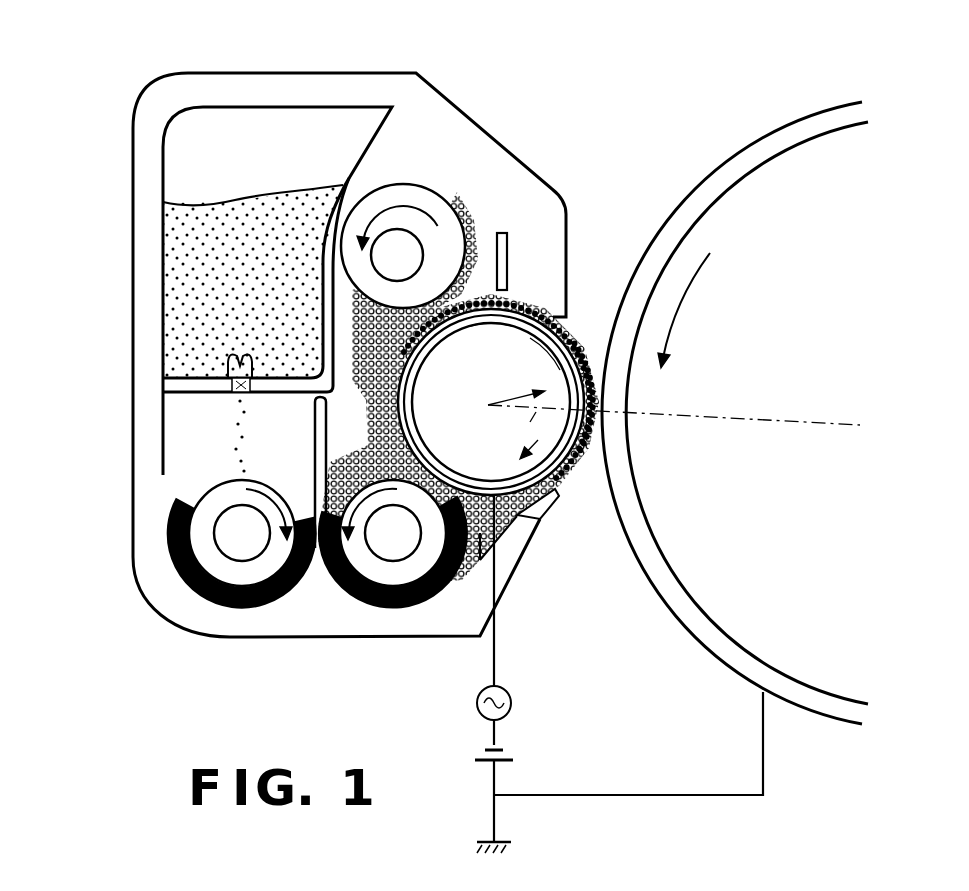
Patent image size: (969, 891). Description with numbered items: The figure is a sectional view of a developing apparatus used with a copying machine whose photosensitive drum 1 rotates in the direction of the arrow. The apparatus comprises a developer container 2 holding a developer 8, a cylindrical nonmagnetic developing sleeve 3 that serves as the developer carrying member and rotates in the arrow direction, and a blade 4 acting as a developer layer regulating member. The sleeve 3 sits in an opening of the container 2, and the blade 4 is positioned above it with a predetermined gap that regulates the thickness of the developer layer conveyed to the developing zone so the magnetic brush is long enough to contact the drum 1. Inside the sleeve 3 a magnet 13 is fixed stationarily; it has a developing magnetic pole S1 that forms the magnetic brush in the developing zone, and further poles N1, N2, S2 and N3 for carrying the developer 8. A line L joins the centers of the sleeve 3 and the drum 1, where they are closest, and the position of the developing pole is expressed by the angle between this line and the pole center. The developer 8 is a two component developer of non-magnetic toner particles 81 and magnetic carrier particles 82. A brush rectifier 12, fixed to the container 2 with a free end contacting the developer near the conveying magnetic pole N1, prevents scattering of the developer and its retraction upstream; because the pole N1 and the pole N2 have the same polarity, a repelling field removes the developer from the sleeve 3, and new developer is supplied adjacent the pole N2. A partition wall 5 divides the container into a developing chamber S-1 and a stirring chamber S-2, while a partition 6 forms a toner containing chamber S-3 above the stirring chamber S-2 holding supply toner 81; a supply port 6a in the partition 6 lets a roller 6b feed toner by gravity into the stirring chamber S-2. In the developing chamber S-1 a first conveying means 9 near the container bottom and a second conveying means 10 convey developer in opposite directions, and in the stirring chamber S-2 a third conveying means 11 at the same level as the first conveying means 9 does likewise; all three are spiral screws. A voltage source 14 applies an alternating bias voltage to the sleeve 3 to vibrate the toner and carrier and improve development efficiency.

The photosensitive drum 1 is at (777, 140).
The developer container 2 is at (132, 318).
The developing sleeve 3 is at (497, 419).
The blade 4 is at (507, 235).
The partition wall 5 is at (300, 433).
The partition 6 is at (200, 380).
The supply port 6a is at (240, 393).
The roller 6b is at (228, 386).
The developer 8 is at (473, 265).
The first conveying means 9 is at (390, 580).
The second conveying means 10 is at (443, 205).
The third conveying means 11 is at (197, 538).
The brush rectifier 12 is at (543, 500).
The magnet 13 is at (565, 335).
The voltage source 14 is at (512, 735).
The non-magnetic toner particles 81 is at (163, 270).
The magnetic carrier particles 82 is at (584, 345).
The developing chamber S-1 is at (343, 290).
The stirring chamber S-2 is at (183, 478).
The toner containing chamber S-3 is at (225, 118).
The line L is at (793, 420).
The developing magnetic pole S1 is at (525, 394).
The magnetic pole S2 is at (491, 341).
The conveying magnetic pole N1 is at (509, 461).
The magnetic pole N2 is at (433, 410).
The magnetic pole N3 is at (539, 360).